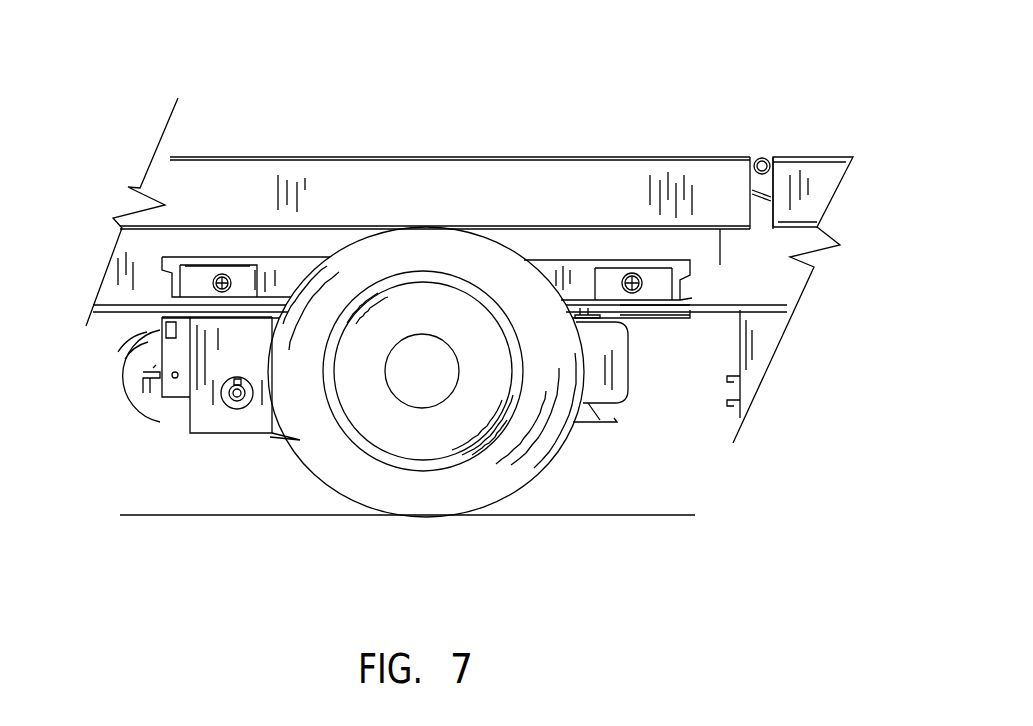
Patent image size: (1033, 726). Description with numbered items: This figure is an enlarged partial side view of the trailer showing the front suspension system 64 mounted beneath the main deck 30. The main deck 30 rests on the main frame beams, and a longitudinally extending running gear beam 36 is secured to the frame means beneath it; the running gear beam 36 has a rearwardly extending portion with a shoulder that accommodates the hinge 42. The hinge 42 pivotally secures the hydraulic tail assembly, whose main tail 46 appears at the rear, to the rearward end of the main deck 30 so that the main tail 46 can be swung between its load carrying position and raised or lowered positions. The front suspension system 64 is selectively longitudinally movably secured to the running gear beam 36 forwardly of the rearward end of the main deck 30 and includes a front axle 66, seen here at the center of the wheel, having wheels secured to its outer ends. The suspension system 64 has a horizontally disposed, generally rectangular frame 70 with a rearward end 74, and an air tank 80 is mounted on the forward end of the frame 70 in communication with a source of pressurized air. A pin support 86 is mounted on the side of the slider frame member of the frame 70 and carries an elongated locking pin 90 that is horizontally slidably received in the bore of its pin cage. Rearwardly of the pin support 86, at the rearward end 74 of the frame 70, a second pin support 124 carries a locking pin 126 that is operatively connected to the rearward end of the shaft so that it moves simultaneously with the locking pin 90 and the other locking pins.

The main deck 30 is at (420, 170).
The running gear beam 36 is at (720, 262).
The hinge 42 is at (758, 157).
The main tail 46 is at (808, 160).
The front suspension system 64 is at (540, 494).
The front axle 66 is at (438, 386).
The frame 70 is at (303, 258).
The rearward end 74 is at (692, 298).
The air tank 80 is at (165, 410).
The pin support 86 is at (252, 265).
The locking pin 90 is at (222, 283).
The pin support 124 is at (660, 270).
The locking pin 126 is at (608, 266).